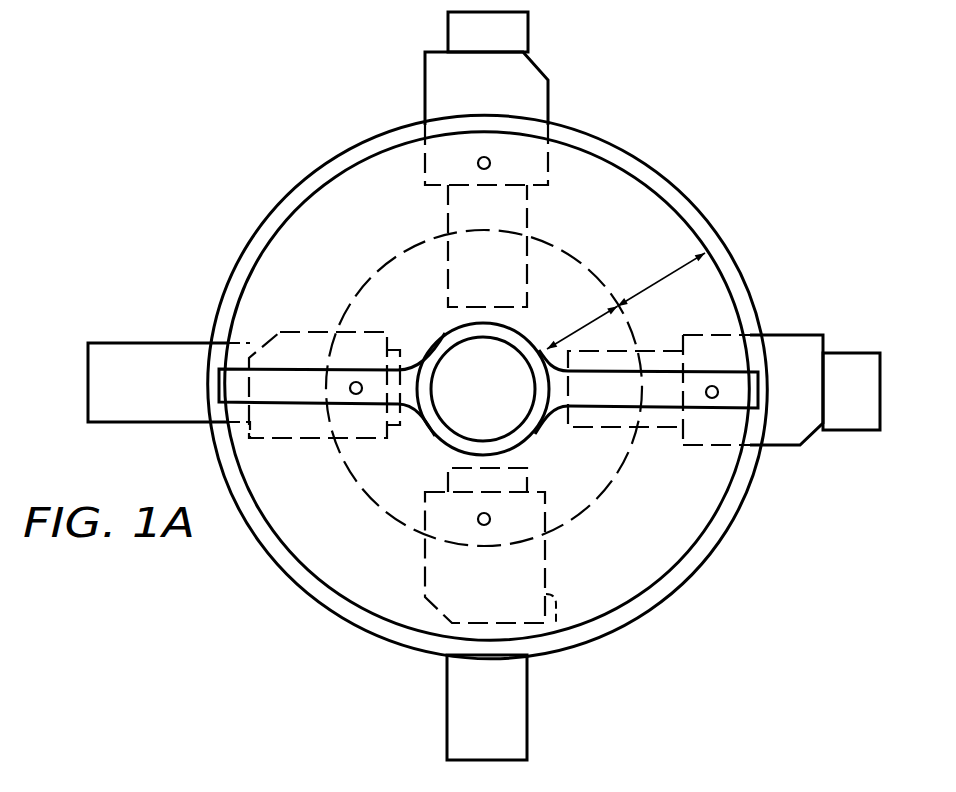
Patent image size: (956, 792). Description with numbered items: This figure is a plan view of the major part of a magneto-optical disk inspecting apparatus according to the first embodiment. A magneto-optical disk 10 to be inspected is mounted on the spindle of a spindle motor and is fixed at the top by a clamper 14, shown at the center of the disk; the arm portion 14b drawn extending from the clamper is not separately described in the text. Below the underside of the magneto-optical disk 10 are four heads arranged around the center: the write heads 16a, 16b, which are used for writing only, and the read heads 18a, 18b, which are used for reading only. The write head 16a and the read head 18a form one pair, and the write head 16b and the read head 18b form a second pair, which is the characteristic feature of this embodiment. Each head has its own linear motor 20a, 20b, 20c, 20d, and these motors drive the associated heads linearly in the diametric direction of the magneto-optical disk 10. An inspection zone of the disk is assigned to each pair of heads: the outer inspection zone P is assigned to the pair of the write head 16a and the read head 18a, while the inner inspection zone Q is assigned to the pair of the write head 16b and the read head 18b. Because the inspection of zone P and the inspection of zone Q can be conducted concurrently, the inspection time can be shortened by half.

The magneto-optical disk 10 is at (692, 200).
The clamper 14 is at (442, 334).
The arm of support member 14b is at (287, 371).
The write head 16a is at (785, 343).
The write head 16b is at (283, 442).
The read head 18a is at (549, 88).
The read head 18b is at (553, 592).
The linear motor 20a is at (845, 352).
The linear motor 20b is at (528, 28).
The linear motor 20c is at (139, 352).
The linear motor 20d is at (528, 700).
The outer inspection zone P is at (662, 278).
The inner inspection zone Q is at (582, 323).